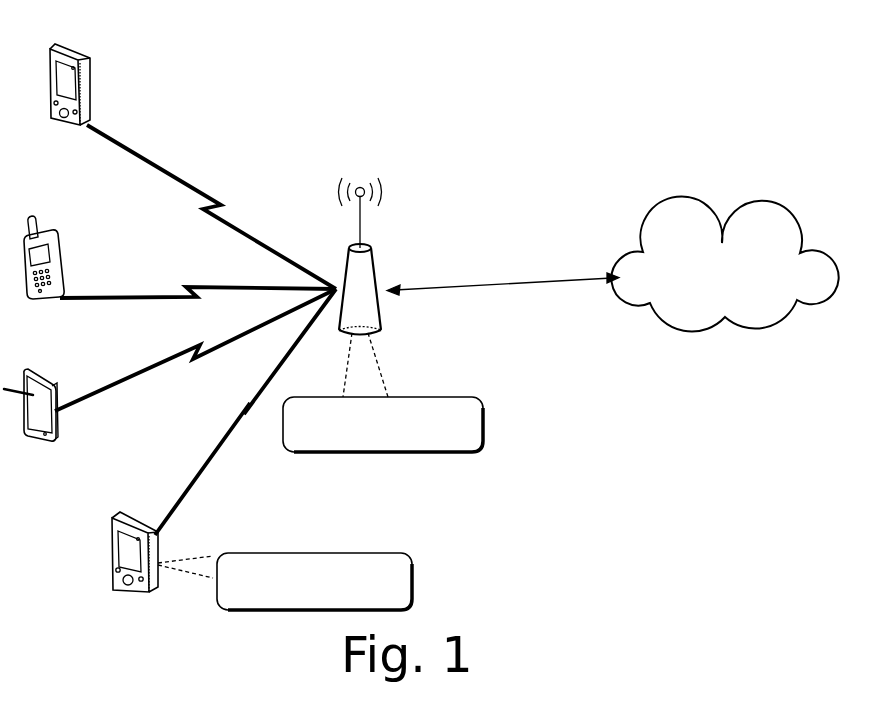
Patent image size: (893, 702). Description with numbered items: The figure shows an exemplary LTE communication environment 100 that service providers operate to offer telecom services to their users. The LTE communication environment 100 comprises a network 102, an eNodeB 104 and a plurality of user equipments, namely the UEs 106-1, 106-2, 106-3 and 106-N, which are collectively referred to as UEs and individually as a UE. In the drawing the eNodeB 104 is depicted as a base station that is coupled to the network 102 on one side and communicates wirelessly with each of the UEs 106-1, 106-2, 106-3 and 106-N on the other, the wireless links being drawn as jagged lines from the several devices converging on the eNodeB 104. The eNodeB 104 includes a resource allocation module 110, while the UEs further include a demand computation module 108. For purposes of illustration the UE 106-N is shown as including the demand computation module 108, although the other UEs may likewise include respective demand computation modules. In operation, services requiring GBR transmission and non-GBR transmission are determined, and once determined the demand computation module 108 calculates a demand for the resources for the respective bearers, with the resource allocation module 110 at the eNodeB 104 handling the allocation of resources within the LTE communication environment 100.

The LTE communication environment 100 is at (456, 66).
The network 102 is at (613, 264).
The eNodeB 104 is at (380, 332).
The user equipment 106-1 is at (90, 63).
The user equipment 106-2 is at (62, 240).
The user equipment 106-3 is at (55, 388).
The user equipment 106-N is at (137, 517).
The demand computation module 108 is at (285, 581).
The resource allocation module 110 is at (383, 392).